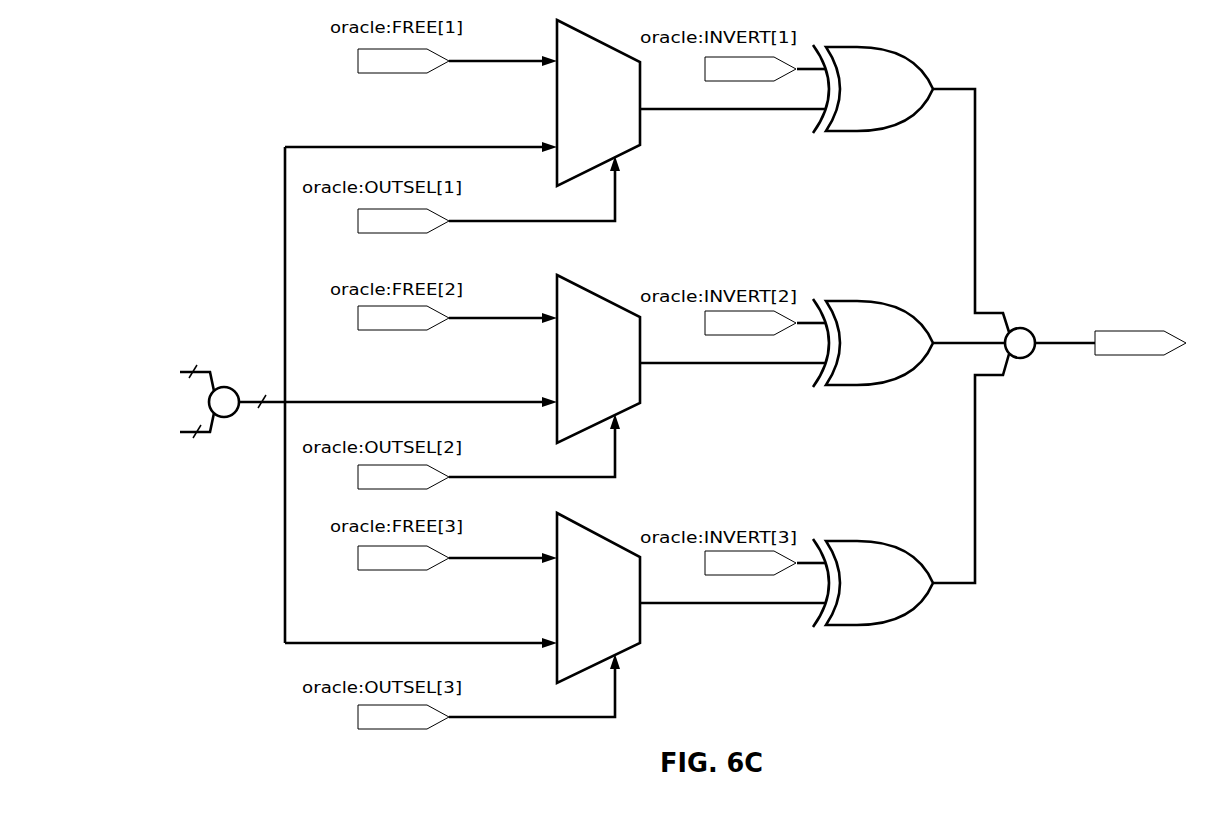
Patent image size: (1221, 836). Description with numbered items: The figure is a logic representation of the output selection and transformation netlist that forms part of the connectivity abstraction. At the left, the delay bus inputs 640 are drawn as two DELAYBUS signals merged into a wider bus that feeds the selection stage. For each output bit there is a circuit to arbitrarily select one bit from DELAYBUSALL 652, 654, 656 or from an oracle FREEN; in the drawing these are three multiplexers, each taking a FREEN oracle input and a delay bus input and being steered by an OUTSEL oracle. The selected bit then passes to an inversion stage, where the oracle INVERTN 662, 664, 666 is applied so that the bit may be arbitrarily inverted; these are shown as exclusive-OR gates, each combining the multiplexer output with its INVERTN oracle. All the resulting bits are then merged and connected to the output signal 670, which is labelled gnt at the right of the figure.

The delay bus merge 640 is at (212, 318).
The DELAYBUSALL bit selection circuit 652 is at (616, 110).
The DELAYBUSALL bit selection circuit 654 is at (616, 365).
The DELAYBUSALL bit selection circuit 656 is at (616, 605).
The oracle INVERTN inverter 662 is at (896, 98).
The oracle INVERTN inverter 664 is at (896, 352).
The oracle INVERTN inverter 666 is at (896, 592).
The output signal 670 is at (1210, 308).